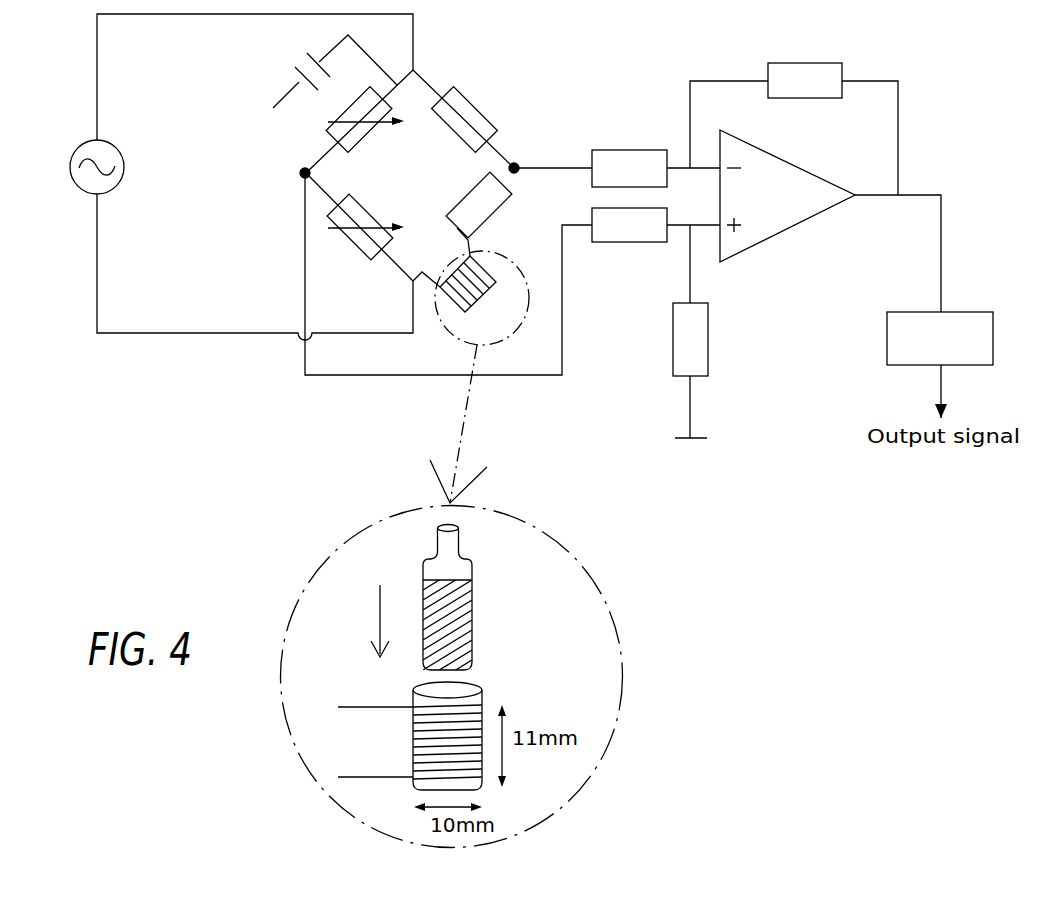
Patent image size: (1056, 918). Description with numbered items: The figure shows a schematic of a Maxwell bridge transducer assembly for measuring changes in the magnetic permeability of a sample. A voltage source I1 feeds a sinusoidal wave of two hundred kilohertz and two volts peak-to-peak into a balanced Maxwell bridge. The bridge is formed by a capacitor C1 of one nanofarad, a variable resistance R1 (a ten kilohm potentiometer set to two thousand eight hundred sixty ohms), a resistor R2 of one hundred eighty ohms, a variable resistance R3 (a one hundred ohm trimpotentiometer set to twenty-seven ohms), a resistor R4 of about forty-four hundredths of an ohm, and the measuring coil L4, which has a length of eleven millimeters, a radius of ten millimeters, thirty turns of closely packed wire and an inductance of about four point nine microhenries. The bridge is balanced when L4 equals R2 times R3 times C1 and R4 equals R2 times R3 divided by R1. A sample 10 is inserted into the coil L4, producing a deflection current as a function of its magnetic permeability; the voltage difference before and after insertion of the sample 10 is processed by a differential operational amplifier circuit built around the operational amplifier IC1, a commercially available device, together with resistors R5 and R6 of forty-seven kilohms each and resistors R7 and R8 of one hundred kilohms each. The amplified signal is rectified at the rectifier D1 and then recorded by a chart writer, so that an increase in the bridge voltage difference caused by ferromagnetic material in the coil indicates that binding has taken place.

The voltage source I1 is at (137, 174).
The capacitor C1 is at (332, 69).
The variable resistance R1 is at (362, 116).
The resistor R2 is at (467, 120).
The variable resistance R3 is at (363, 229).
The resistor R4 is at (484, 206).
The measuring coil L4 is at (433, 520).
The resistor R5 is at (629, 155).
The resistor R6 is at (629, 239).
The resistor R7 is at (732, 339).
The resistor R8 is at (803, 68).
The operational amplifier IC1 is at (777, 237).
The rectifier D1 is at (959, 338).
The sample 10 is at (473, 638).